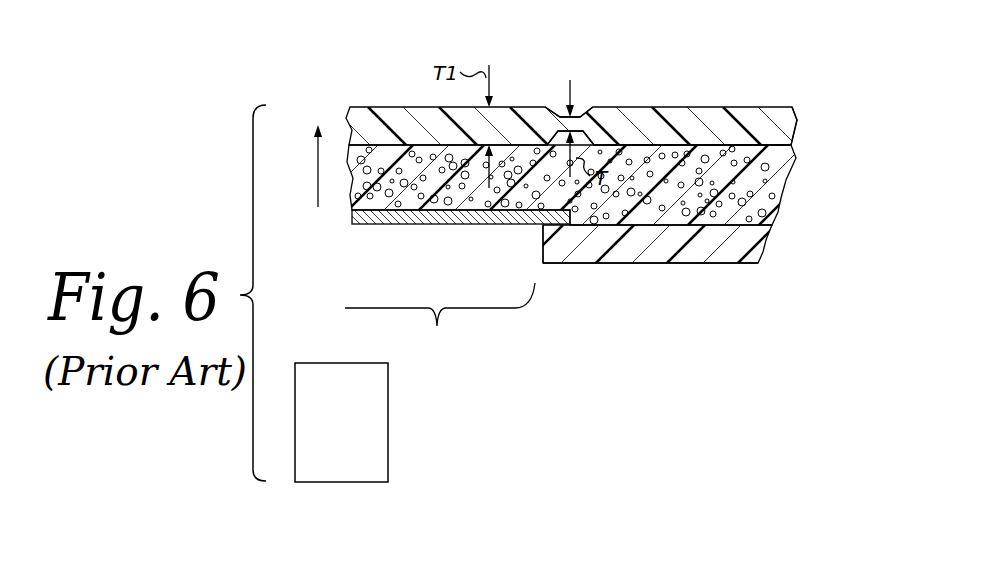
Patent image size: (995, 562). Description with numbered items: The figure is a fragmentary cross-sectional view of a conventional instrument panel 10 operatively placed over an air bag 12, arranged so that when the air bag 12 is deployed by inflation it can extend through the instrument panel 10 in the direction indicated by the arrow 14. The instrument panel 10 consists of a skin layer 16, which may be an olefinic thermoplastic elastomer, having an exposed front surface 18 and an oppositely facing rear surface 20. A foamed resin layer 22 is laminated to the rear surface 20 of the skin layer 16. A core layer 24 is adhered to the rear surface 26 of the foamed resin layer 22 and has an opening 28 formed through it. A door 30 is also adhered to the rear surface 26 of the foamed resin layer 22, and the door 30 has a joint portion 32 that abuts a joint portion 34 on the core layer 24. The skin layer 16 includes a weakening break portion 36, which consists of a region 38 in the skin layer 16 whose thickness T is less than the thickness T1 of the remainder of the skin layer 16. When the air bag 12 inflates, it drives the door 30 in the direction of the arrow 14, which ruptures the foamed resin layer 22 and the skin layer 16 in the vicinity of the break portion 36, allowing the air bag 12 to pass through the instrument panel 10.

The instrument panel 10 is at (842, 148).
The air bag 12 is at (331, 471).
The arrow 14 is at (304, 177).
The skin layer 16 is at (740, 110).
The exposed front surface 18 is at (786, 106).
The rear surface 20 is at (782, 173).
The foamed resin layer 22 is at (695, 167).
The core layer 24 is at (688, 256).
The rear surface 26 is at (748, 264).
The opening 28 is at (440, 321).
The door 30 is at (452, 227).
The joint portion 32 is at (607, 193).
The joint portion 34 is at (552, 265).
The weakening break portion 36 is at (578, 70).
The region 38 is at (581, 115).